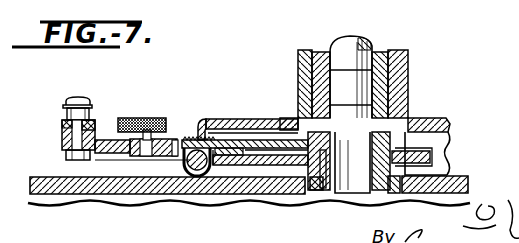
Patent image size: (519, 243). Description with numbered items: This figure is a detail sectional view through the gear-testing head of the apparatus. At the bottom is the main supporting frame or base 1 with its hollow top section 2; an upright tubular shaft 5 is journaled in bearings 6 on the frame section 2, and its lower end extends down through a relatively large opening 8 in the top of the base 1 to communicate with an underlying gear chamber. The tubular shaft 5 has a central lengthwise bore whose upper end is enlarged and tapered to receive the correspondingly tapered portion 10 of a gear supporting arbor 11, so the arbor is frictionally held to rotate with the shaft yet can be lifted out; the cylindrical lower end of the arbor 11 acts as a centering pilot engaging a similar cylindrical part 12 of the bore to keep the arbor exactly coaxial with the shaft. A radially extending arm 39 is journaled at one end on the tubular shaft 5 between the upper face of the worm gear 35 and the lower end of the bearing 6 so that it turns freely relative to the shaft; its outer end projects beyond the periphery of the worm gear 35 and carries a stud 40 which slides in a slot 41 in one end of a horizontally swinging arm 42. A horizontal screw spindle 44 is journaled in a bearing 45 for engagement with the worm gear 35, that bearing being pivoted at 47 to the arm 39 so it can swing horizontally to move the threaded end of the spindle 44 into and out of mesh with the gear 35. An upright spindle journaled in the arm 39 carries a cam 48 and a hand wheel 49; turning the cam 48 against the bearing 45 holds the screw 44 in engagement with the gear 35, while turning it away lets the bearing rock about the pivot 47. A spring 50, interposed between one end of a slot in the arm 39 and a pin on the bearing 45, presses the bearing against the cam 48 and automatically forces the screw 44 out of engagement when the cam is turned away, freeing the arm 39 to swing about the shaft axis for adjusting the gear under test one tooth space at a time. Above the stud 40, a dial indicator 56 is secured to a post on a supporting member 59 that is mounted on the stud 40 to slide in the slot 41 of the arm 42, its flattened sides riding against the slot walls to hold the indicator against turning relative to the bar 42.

The main supporting frame or base 1 is at (118, 192).
The hollow top section 2 is at (446, 119).
The upright tubular shaft 5 is at (310, 75).
The bearings 6 is at (402, 54).
The opening 8 is at (309, 186).
The tapered portion 10 is at (345, 50).
The gear supporting arbor 11 is at (366, 80).
The cylindrical part of the bore 12 is at (395, 109).
The worm gear 35 is at (265, 166).
The radially extending arm 39 is at (238, 140).
The stud 40 is at (62, 150).
The slot 41 is at (93, 129).
The horizontally swinging arm 42 is at (62, 133).
The horizontal screw spindle 44 is at (195, 170).
The bearing 45 is at (205, 166).
The pivot 47 is at (136, 158).
The cam 48 is at (162, 157).
The hand wheel 49 is at (148, 118).
The spring 50 is at (197, 138).
The dial indicator 56 is at (70, 97).
The supporting member 59 is at (62, 123).